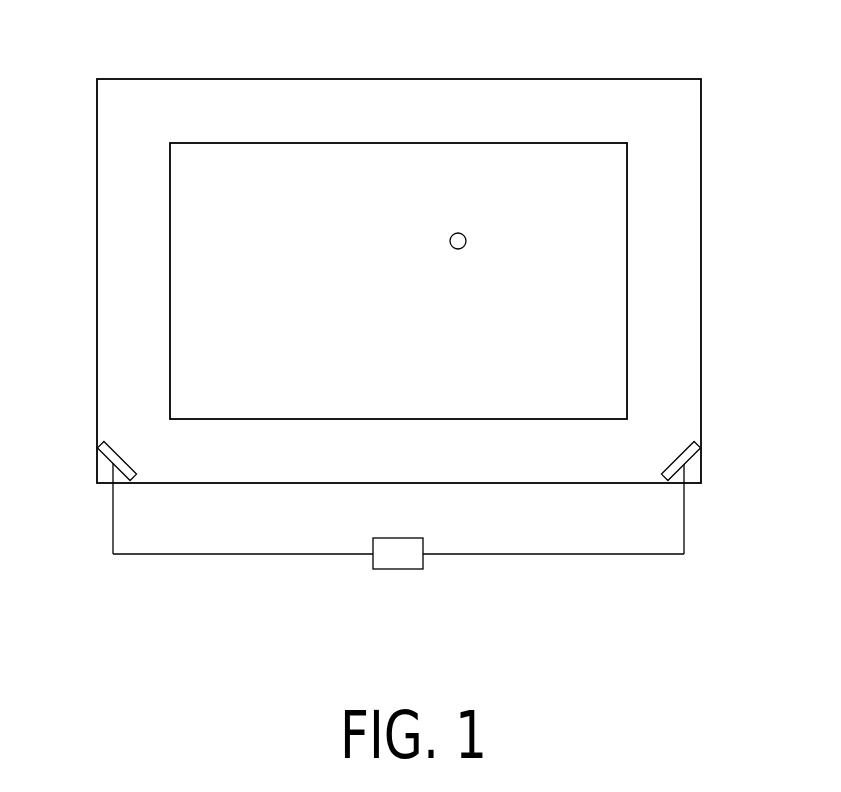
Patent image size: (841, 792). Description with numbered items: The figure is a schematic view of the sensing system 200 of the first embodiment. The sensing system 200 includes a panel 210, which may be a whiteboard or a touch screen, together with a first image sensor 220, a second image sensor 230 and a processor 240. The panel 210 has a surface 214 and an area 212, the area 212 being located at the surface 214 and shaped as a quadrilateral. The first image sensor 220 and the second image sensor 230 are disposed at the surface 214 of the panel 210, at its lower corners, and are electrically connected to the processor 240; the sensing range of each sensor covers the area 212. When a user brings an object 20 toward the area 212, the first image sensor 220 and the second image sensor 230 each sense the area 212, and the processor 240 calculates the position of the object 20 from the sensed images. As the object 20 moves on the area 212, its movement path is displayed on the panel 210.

The object 20 is at (462, 233).
The sensing system 200 is at (787, 596).
The panel 210 is at (687, 140).
The area 212 is at (598, 280).
The surface 214 is at (608, 97).
The first image sensor 220 is at (96, 455).
The second image sensor 230 is at (702, 455).
The processor 240 is at (398, 569).